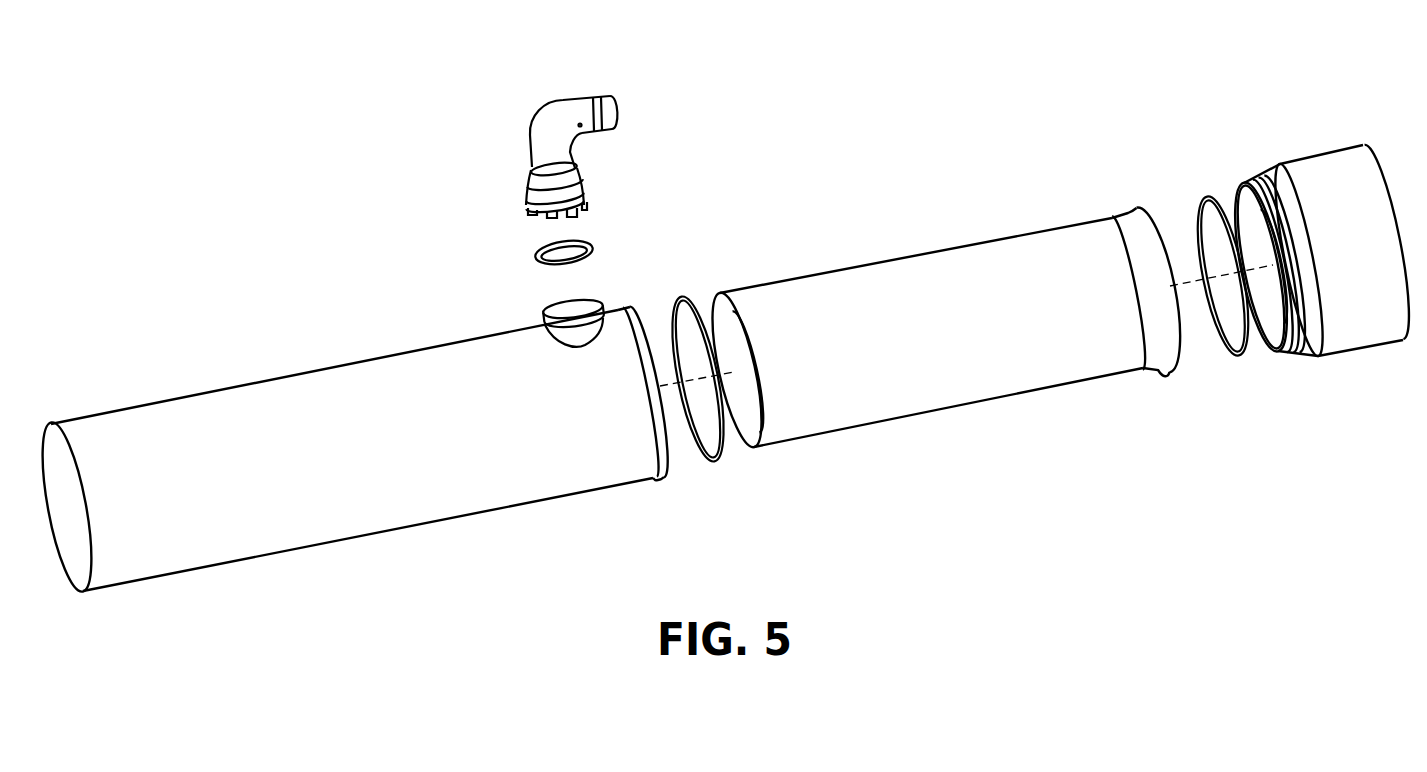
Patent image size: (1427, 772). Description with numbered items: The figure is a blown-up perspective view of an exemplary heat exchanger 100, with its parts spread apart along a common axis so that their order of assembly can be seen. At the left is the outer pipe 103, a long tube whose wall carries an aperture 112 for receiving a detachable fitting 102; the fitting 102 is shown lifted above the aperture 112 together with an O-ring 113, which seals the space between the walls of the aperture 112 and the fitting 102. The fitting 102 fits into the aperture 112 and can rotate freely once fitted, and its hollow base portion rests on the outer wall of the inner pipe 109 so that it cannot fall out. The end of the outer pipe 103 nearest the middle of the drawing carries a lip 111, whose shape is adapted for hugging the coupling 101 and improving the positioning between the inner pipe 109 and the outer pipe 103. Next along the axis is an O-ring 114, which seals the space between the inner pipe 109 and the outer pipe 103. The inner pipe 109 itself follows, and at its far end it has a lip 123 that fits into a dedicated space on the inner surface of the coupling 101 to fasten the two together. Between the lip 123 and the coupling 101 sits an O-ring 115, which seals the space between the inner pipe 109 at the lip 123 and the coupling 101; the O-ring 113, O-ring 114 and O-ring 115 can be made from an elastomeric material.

The heat exchanger 100 is at (250, 93).
The coupling 101 is at (1327, 167).
The fitting 102 is at (545, 147).
The outer pipe 103 is at (252, 398).
The inner pipe 109 is at (920, 272).
The lip 111 is at (630, 308).
The aperture 112 is at (558, 312).
The O-ring 113 is at (535, 257).
The O-ring 114 is at (680, 297).
The O-ring 115 is at (1207, 193).
The lip 123 is at (1133, 220).